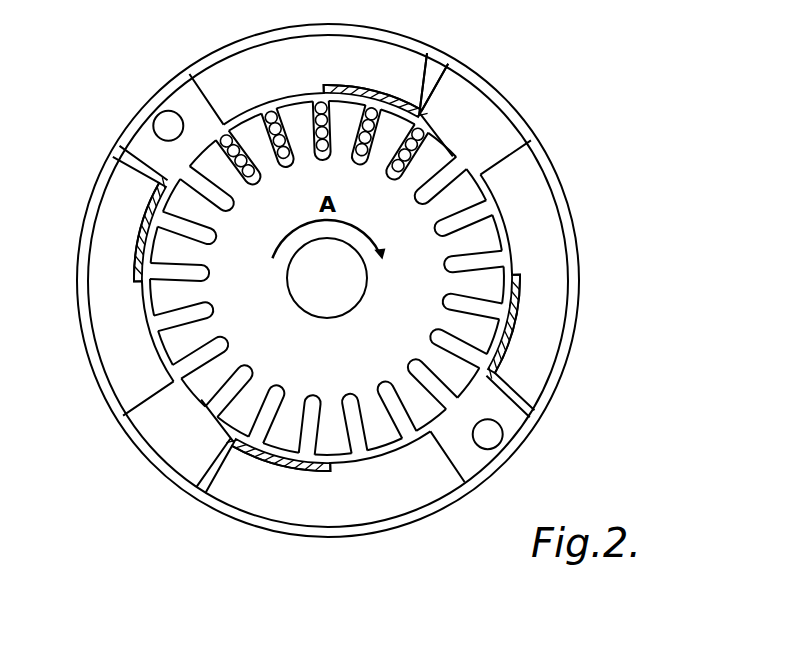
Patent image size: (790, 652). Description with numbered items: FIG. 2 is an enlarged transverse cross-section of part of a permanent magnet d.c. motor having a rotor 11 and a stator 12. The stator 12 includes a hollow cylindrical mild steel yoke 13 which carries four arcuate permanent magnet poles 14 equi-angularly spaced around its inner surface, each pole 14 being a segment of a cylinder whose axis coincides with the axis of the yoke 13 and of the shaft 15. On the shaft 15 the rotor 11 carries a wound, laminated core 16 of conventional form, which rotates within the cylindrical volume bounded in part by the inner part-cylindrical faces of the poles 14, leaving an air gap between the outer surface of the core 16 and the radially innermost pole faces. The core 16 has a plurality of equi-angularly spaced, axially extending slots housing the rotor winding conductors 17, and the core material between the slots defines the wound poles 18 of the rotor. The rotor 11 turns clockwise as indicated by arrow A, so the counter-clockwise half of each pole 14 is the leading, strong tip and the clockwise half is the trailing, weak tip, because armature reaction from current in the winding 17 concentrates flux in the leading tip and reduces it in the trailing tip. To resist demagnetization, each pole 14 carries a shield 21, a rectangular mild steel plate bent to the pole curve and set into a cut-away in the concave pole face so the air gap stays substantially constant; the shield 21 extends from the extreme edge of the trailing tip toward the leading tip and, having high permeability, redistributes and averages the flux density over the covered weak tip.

The rotor 11 is at (476, 386).
The stator 12 is at (570, 197).
The yoke 13 is at (524, 131).
The permanent magnet pole 14 is at (402, 70).
The shaft 15 is at (314, 293).
The core 16 is at (413, 228).
The rotor winding conductors 17 is at (440, 118).
The wound poles 18 is at (313, 140).
The shield 21 is at (410, 100).